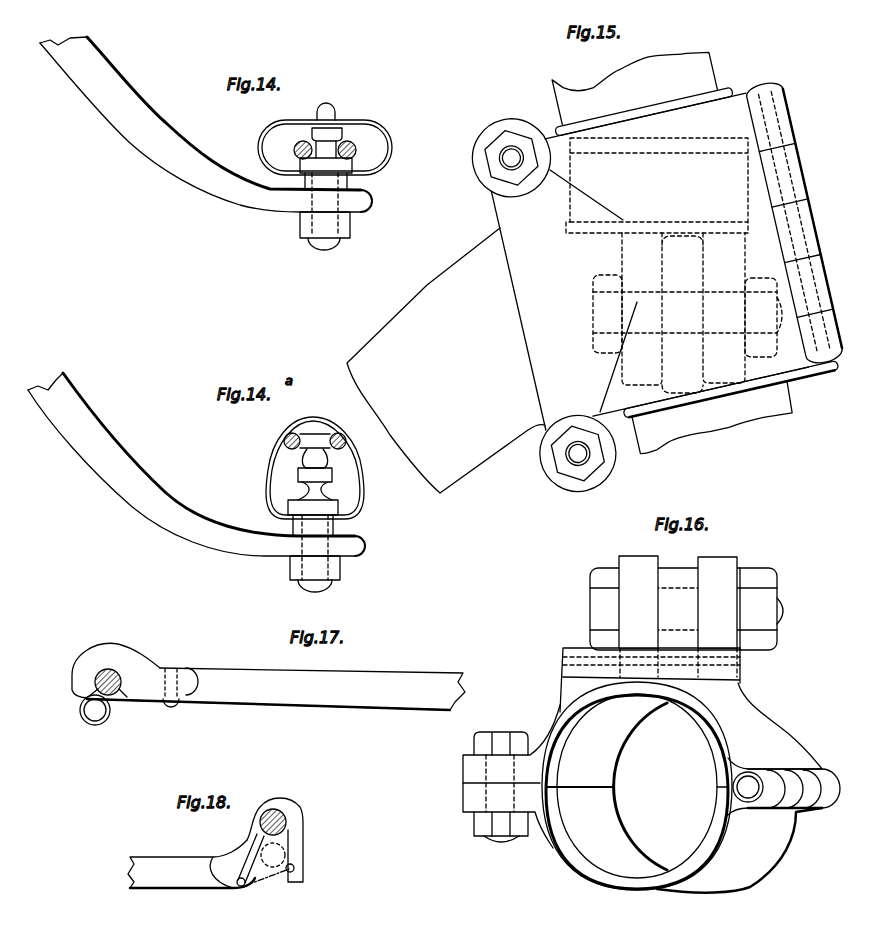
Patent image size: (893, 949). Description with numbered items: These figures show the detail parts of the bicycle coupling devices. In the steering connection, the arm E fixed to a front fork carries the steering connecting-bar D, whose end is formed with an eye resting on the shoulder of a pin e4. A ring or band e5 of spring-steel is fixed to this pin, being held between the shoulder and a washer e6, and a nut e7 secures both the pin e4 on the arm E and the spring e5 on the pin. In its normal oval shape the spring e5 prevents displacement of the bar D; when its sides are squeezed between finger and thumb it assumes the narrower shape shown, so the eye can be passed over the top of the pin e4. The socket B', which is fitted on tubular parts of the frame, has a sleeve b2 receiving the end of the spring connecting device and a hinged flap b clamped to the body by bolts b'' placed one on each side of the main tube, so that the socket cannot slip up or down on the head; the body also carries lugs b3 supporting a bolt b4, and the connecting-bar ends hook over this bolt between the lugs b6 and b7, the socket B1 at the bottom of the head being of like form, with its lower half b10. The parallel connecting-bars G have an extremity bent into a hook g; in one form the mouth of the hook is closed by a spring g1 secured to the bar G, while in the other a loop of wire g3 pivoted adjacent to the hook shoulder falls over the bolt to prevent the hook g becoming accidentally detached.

In FIG. 14, the arm E is at (206, 124).
In FIG. 14A, the arm E is at (196, 464).
In FIG. 14, the pin e4 is at (332, 163).
In FIG. 14A, the pin e4 is at (328, 508).
In FIG. 14, the ring or band of spring-steel e5 is at (271, 120).
In FIG. 14A, the ring or band of spring-steel e5 is at (298, 416).
In FIG. 14, the washer e6 is at (326, 204).
In FIG. 14A, the washer e6 is at (318, 527).
In FIG. 14, the nut e7 is at (343, 227).
In FIG. 14A, the nut e7 is at (332, 570).
In FIG. 14, the steering connecting-bar D is at (356, 150).
In FIG. 14A, the steering connecting-bar D is at (347, 440).
In FIG. 15, the socket B1 is at (660, 257).
In FIG. 16, the socket B1 is at (651, 786).
In FIG. 15, the socket B' is at (794, 223).
In FIG. 15, the bolts b'' is at (536, 305).
In FIG. 16, the bolts b'' is at (501, 773).
In FIG. 15, the flap b is at (683, 313).
In FIG. 16, the flap b is at (739, 850).
In FIG. 15, the sleeve or socket proper b2 is at (657, 185).
In FIG. 16, the sleeve or socket proper b2 is at (583, 652).
In FIG. 15, the lugs b3 is at (687, 326).
In FIG. 16, the bolt b4 is at (686, 609).
In FIG. 17, the bolt b4 is at (95, 682).
In FIG. 18, the bolt b4 is at (287, 822).
In FIG. 16, the lug b6 is at (636, 561).
In FIG. 16, the lug b7 is at (718, 563).
In FIG. 16, the lower ring half b10 is at (623, 786).
In FIG. 17, the connecting-bar G is at (276, 689).
In FIG. 18, the connecting-bar G is at (191, 864).
In FIG. 17, the hook g is at (180, 727).
In FIG. 18, the hook g is at (293, 840).
In FIG. 17, the spring g1 is at (108, 722).
In FIG. 18, the loop of wire g3 is at (260, 878).